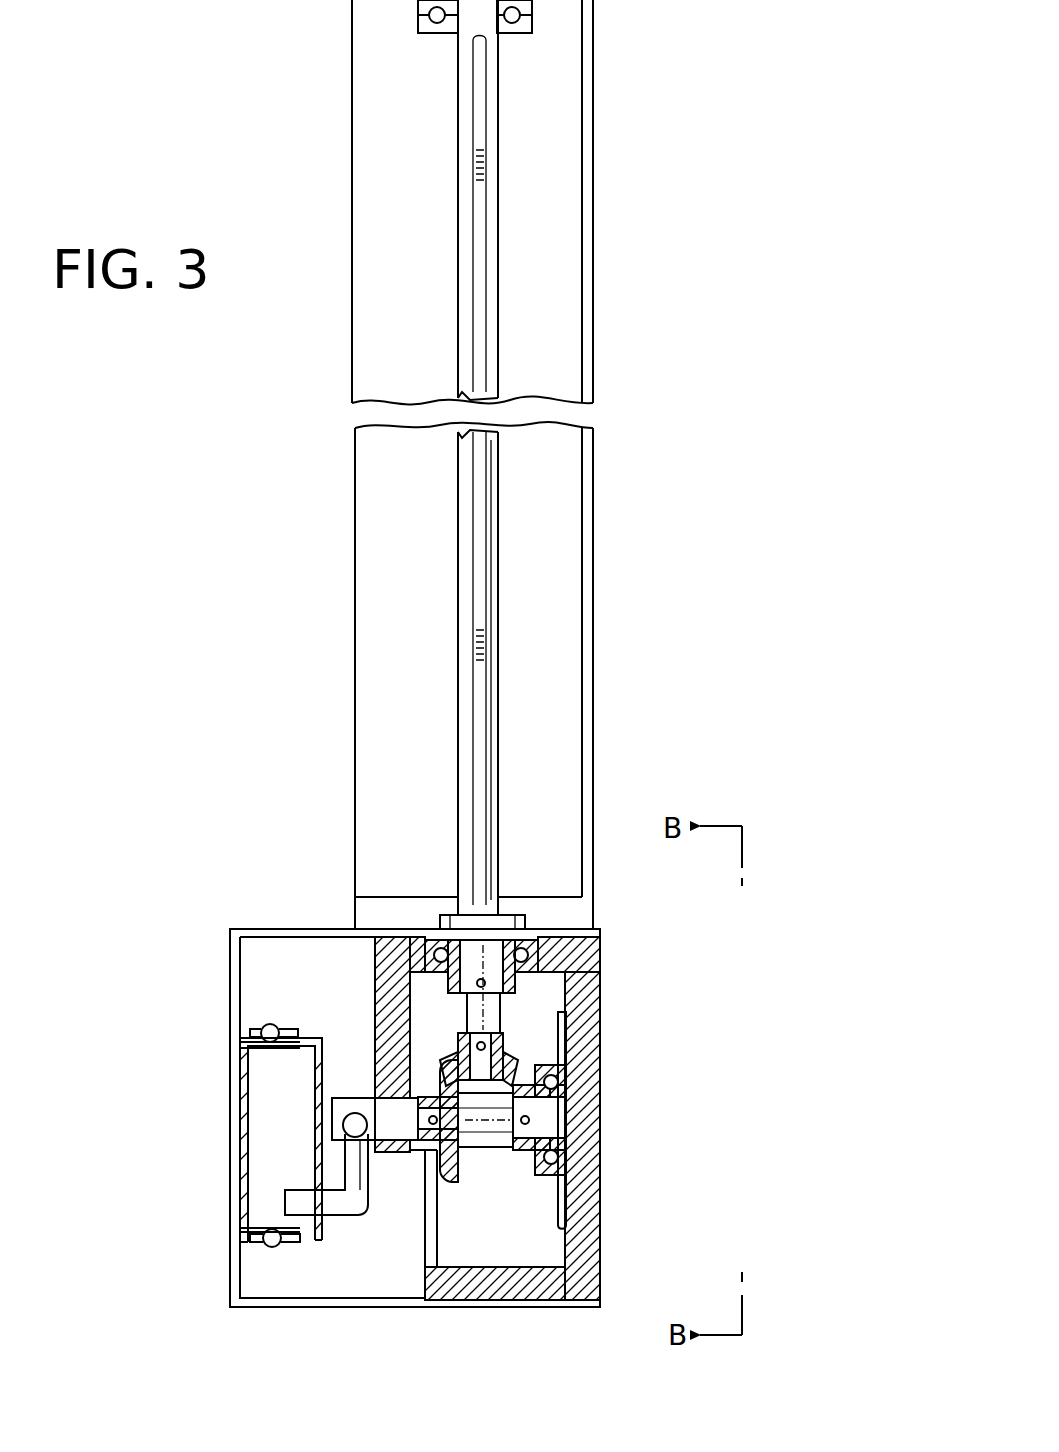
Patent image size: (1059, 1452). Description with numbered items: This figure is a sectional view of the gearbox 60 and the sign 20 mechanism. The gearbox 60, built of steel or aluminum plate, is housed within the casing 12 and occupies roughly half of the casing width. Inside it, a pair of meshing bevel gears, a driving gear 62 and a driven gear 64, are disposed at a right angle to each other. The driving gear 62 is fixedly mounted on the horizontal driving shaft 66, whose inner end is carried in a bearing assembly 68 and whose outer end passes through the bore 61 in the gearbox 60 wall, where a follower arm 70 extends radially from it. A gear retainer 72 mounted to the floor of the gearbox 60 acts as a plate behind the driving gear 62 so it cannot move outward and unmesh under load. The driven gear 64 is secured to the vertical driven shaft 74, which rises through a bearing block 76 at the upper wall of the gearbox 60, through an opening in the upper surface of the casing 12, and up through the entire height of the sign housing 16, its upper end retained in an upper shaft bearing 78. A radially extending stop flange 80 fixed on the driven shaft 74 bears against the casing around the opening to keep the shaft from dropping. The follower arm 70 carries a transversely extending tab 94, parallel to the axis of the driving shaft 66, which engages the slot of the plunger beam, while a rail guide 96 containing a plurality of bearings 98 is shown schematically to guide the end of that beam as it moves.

The casing 12 is at (262, 930).
The sign housing 16 is at (585, 206).
The sign 20 is at (495, 680).
The gearbox 60 is at (612, 1020).
The bore 61 is at (377, 1037).
The driving gear 62 is at (493, 1128).
The driven gear 64 is at (505, 1050).
The driving shaft 66 is at (345, 1098).
The bearing assembly 68 is at (560, 1168).
The follower arm 70 is at (357, 1192).
The gear retainer 72 is at (422, 1195).
The driven shaft 74 is at (500, 1017).
The bearing block 76 is at (560, 958).
The upper shaft bearing 78 is at (535, 33).
The stop flange 80 is at (450, 915).
The tab 94 is at (286, 1195).
The rail guide 96 is at (252, 1030).
The bearings 98 is at (258, 1042).